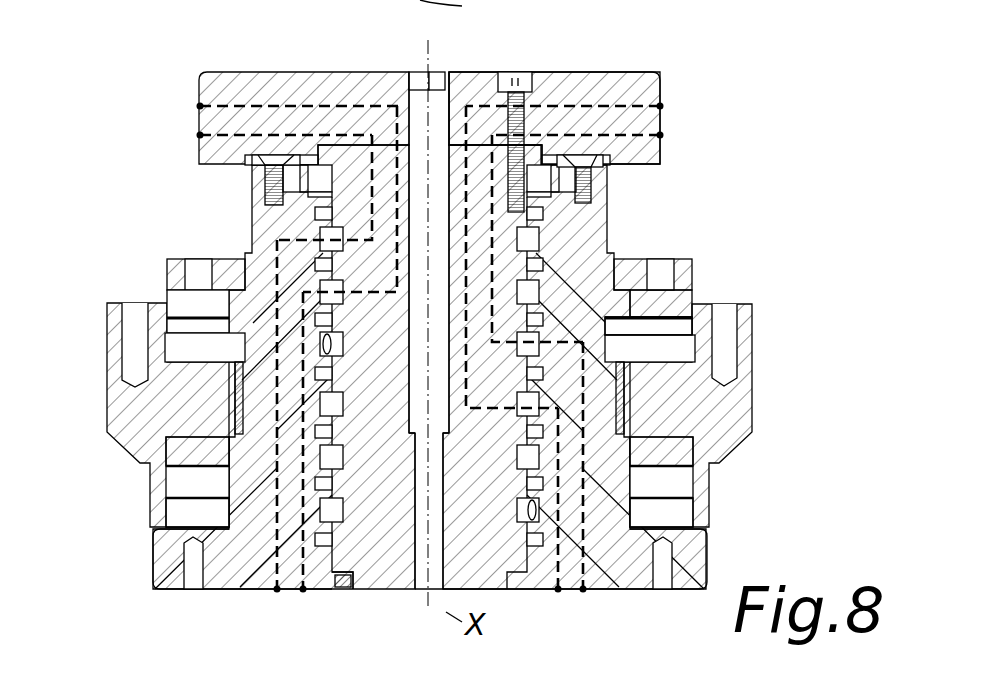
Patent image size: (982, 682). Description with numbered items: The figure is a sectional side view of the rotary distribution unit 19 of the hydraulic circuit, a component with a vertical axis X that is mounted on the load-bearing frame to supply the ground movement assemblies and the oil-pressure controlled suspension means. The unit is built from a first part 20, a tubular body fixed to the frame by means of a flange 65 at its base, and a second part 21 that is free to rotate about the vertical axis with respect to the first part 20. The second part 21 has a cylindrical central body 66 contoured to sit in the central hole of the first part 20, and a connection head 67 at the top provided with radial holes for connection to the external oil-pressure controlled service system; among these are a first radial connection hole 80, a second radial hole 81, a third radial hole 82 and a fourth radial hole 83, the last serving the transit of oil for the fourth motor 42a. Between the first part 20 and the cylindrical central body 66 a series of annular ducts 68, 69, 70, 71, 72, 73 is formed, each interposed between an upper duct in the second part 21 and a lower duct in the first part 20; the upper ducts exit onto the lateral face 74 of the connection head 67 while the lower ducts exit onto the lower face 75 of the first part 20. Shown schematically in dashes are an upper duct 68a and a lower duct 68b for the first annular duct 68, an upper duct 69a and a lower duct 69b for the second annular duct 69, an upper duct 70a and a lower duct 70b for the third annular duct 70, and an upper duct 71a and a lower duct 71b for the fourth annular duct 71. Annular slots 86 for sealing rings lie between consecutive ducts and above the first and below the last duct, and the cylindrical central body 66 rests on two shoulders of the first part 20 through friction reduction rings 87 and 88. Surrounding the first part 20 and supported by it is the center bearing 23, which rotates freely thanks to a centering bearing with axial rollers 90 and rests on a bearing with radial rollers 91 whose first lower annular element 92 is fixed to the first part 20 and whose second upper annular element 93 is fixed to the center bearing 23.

The rotary distribution unit 19 is at (148, 105).
The first part 20 is at (262, 578).
The second part 21 is at (472, 67).
The center bearing 23 is at (140, 422).
The fourth motor 42a is at (472, 12).
The flange 65 is at (162, 575).
The cylindrical central body 66 is at (497, 562).
The connection head 67 is at (645, 72).
The first annular duct 68 is at (596, 250).
The upper duct 68a is at (295, 132).
The lower duct 68b is at (260, 258).
The second annular duct 69 is at (605, 288).
The upper duct 69a is at (333, 106).
The lower duct 69b is at (330, 346).
The third annular duct 70 is at (662, 345).
The upper duct 70a is at (618, 115).
The lower duct 70b is at (640, 458).
The fourth annular duct 71 is at (240, 386).
The upper duct 71a is at (585, 108).
The lower duct 71b is at (655, 480).
The annular duct 72 is at (162, 497).
The annular duct 73 is at (665, 552).
The lateral face 74 is at (197, 165).
The lower face 75 is at (320, 592).
The first radial connection hole 80 is at (200, 106).
The second radial hole 81 is at (660, 106).
The third radial hole 82 is at (200, 135).
The fourth radial hole 83 is at (660, 135).
The annular slots 86 is at (636, 292).
The friction reduction ring 87 is at (548, 208).
The friction reduction ring 88 is at (344, 592).
The centering bearing with axial rollers 90 is at (625, 398).
The bearing with radial rollers 91 is at (162, 505).
The first lower annular element 92 is at (194, 572).
The second upper annular element 93 is at (178, 447).